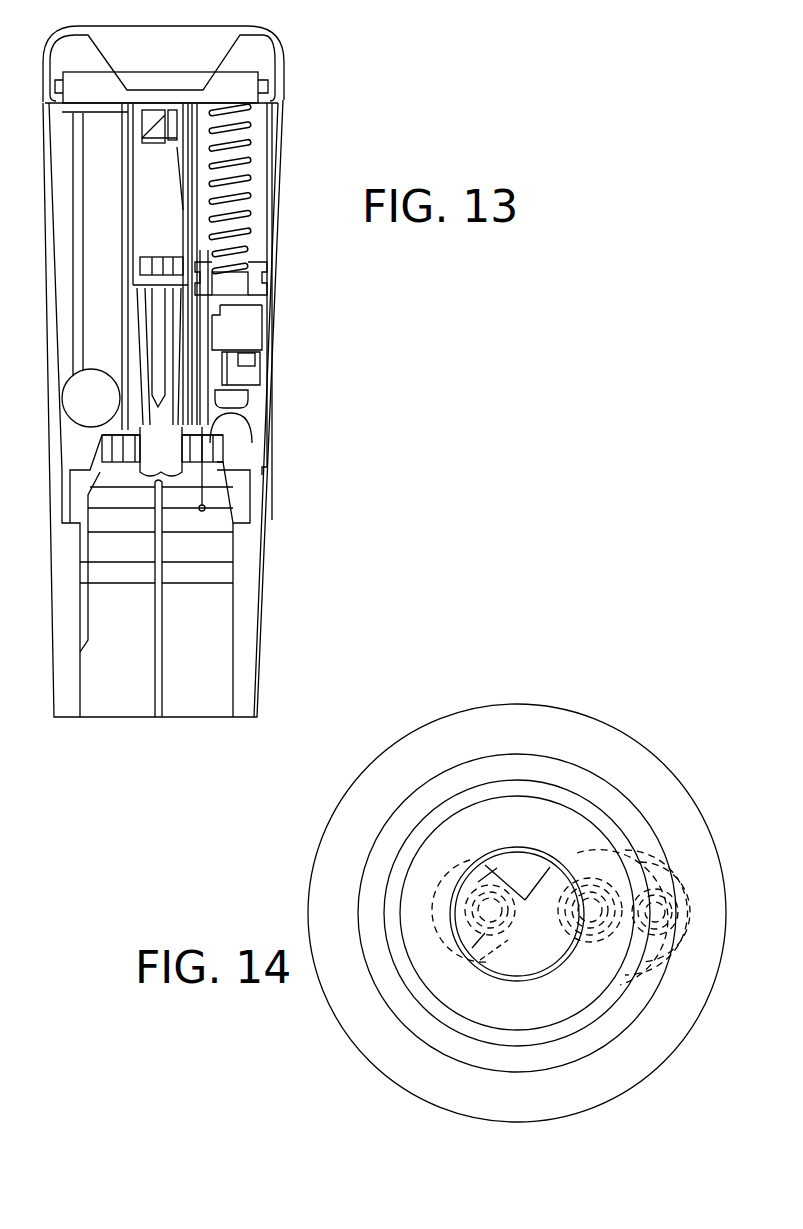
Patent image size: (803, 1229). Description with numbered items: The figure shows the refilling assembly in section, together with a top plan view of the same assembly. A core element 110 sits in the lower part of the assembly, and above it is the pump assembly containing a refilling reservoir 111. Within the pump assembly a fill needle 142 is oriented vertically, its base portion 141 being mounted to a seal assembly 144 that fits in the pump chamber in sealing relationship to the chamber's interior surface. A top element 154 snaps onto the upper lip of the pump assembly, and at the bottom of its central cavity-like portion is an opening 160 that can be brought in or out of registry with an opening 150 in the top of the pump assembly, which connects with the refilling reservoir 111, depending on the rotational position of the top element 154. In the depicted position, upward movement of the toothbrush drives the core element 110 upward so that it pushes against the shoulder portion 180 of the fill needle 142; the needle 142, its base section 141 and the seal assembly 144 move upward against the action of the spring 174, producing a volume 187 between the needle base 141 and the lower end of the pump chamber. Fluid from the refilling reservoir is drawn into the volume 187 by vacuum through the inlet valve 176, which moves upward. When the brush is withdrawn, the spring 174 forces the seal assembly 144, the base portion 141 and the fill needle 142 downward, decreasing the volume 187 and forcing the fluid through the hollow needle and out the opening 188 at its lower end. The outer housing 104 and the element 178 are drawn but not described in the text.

In FIG. 13, the housing 104 is at (253, 615).
In FIG. 13, the core element 110 is at (227, 545).
In FIG. 13, the refilling reservoir 111 is at (77, 413).
In FIG. 13, the base portion 141 is at (245, 300).
In FIG. 13, the fill needle 142 is at (207, 470).
In FIG. 13, the seal assembly 144 is at (263, 262).
In FIG. 13, the top element 154 is at (282, 50).
In FIG. 14, the top element 154 is at (598, 722).
In FIG. 13, the spring 174 is at (247, 163).
In FIG. 13, the inlet valve 176 is at (248, 365).
In FIG. 13, the cup seat 178 is at (248, 395).
In FIG. 13, the shoulder portion 180 is at (232, 424).
In FIG. 13, the volume 187 is at (257, 330).
In FIG. 13, the opening 188 is at (207, 505).
In FIG. 14, the opening 160 is at (488, 858).
In FIG. 14, the opening 150 is at (440, 933).